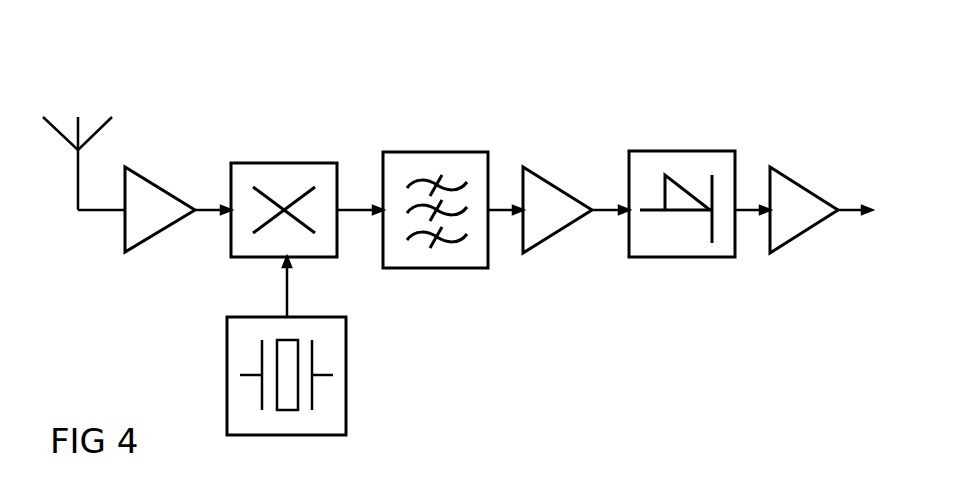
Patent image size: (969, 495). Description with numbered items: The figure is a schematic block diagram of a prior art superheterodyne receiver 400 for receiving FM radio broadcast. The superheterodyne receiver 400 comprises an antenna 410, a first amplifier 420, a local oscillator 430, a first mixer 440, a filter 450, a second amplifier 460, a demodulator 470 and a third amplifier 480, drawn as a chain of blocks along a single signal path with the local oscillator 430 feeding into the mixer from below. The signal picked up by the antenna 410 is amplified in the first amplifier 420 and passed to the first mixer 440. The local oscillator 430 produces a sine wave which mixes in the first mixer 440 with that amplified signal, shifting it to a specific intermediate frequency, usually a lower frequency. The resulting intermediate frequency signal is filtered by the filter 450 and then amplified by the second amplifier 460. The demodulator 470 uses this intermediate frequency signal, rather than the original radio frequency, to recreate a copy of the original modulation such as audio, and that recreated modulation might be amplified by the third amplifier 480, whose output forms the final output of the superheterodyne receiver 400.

The superheterodyne receiver 400 is at (459, 72).
The antenna 410 is at (100, 122).
The first amplifier 420 is at (158, 236).
The local oscillator 430 is at (348, 352).
The first mixer 440 is at (302, 162).
The filter 450 is at (428, 150).
The second amplifier 460 is at (570, 190).
The demodulator 470 is at (677, 258).
The third amplifier 480 is at (803, 178).